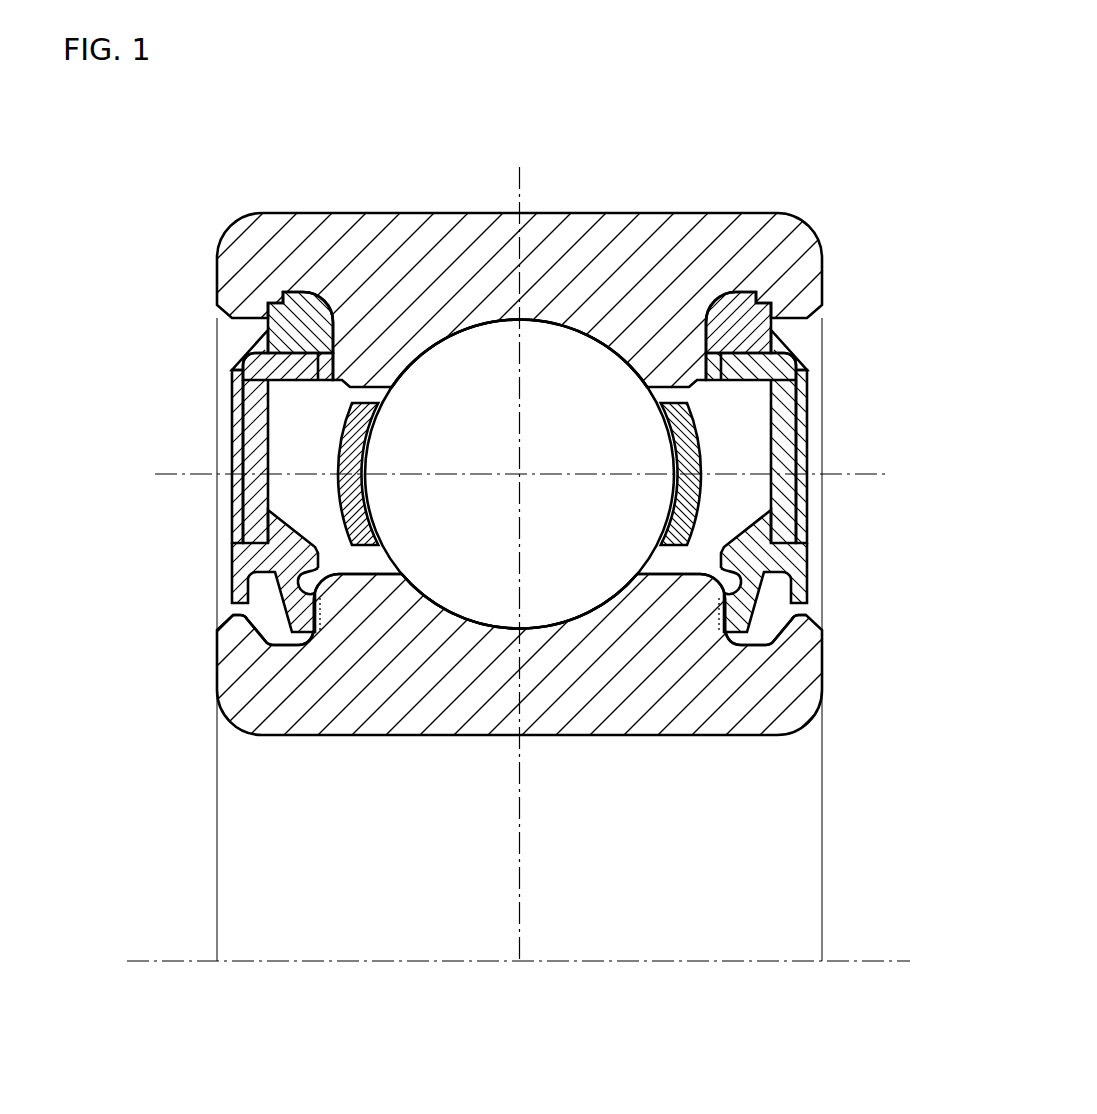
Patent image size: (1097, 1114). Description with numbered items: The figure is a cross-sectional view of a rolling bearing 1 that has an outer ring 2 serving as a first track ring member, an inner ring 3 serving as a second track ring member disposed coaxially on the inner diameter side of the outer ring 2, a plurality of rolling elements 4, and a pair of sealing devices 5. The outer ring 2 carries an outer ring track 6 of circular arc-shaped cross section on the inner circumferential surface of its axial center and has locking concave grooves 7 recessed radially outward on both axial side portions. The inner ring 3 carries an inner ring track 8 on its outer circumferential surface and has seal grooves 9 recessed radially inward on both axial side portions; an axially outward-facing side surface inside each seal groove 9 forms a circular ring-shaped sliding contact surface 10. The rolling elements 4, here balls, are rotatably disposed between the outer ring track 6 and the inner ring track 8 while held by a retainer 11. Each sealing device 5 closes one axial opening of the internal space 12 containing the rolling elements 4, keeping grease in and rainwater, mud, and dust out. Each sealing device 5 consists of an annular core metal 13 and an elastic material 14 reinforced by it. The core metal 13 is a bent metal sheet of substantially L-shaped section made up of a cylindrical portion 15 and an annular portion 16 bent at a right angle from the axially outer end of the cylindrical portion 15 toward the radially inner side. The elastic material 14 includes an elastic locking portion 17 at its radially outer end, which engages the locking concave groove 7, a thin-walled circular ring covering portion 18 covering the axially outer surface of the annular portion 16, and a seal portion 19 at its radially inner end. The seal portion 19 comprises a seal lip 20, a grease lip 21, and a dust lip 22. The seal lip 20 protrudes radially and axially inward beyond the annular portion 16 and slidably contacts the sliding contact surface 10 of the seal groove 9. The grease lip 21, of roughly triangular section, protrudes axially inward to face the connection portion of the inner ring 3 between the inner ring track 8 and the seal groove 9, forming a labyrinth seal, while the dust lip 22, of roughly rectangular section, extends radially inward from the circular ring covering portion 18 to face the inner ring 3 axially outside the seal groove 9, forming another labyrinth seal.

The rolling bearing 1 is at (762, 197).
The outer ring 2 is at (600, 238).
The inner ring 3 is at (565, 715).
The rolling elements 4 is at (463, 378).
The sealing devices 5 is at (544, 426).
The outer ring track 6 is at (545, 343).
The locking concave grooves 7 is at (290, 322).
The inner ring track 8 is at (497, 625).
The seal grooves 9 is at (267, 646).
The sliding contact surface 10 is at (302, 641).
The retainer 11 is at (690, 490).
The internal space 12 is at (305, 490).
The core metal 13 is at (255, 405).
The elastic material 14 is at (272, 342).
The cylindrical portion 15 is at (335, 325).
The annular portion 16 is at (245, 520).
The elastic locking portion 17 is at (266, 334).
The circular ring covering portion 18 is at (238, 453).
The seal portion 19 is at (250, 572).
The seal lip 20 is at (314, 626).
The grease lip 21 is at (338, 563).
The dust lip 22 is at (245, 605).